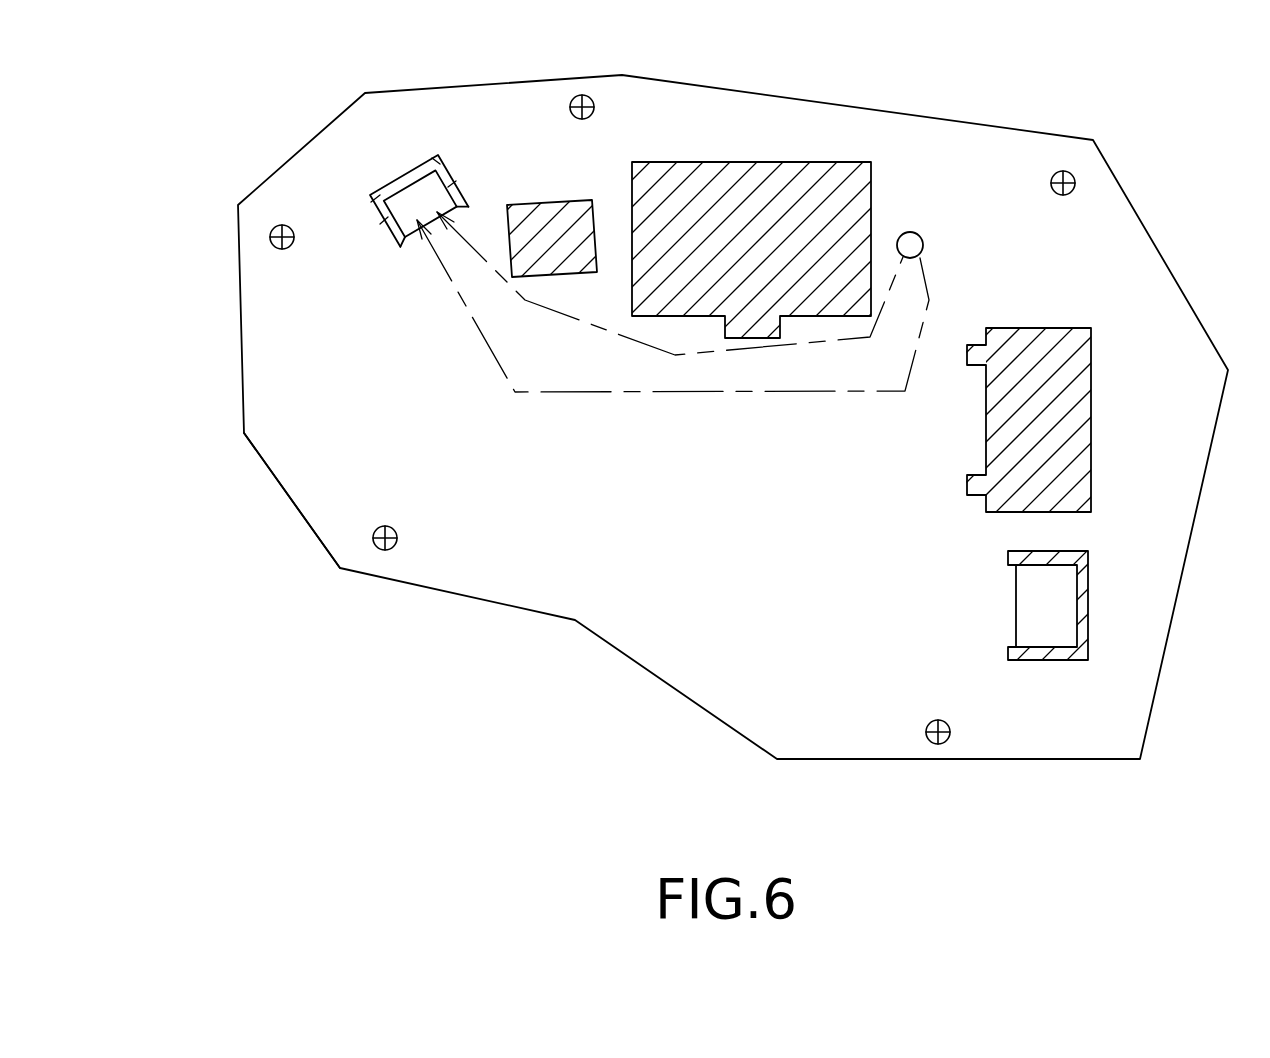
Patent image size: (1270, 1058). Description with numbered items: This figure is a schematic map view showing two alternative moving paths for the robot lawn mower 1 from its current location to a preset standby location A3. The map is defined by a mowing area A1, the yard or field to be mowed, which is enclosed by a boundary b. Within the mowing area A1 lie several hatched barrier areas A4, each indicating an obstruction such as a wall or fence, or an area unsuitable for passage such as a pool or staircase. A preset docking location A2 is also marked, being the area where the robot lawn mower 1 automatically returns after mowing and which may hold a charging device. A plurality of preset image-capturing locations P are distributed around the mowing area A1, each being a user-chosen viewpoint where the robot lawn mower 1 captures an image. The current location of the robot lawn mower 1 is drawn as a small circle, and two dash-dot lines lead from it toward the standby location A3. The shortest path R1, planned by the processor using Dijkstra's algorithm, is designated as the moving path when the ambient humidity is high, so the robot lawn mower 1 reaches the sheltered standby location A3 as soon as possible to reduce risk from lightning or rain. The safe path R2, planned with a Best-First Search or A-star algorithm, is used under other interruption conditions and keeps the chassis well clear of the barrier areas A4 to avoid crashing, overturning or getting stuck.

The mowing area A1 is at (282, 455).
The boundary b is at (303, 518).
The preset image-capturing locations P is at (590, 96).
The preset standby location A3 is at (403, 195).
The barrier areas A4 is at (643, 186).
The preset docking location A2 is at (1011, 623).
The robot lawn mower 1 is at (923, 243).
The shortest path R1 is at (607, 332).
The safe path R2 is at (655, 393).